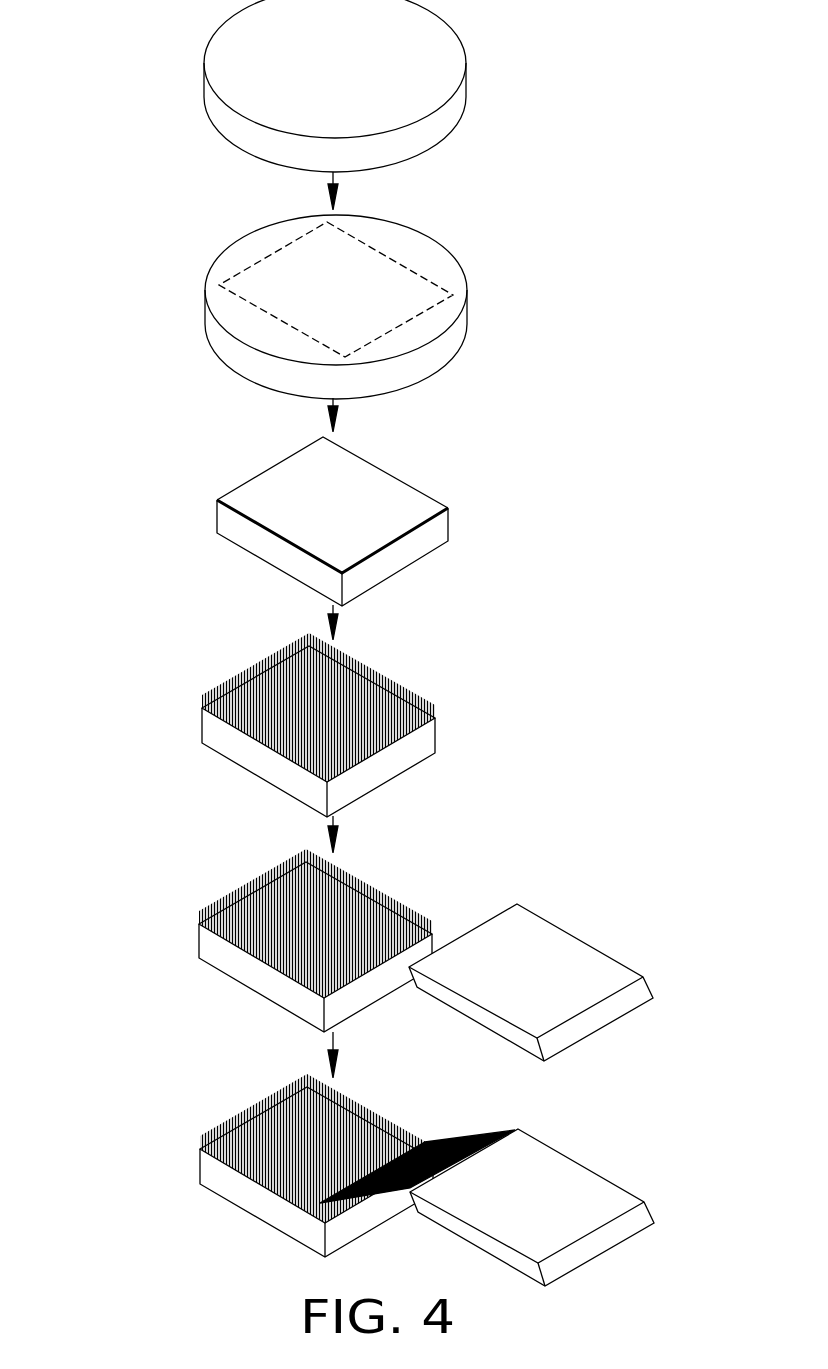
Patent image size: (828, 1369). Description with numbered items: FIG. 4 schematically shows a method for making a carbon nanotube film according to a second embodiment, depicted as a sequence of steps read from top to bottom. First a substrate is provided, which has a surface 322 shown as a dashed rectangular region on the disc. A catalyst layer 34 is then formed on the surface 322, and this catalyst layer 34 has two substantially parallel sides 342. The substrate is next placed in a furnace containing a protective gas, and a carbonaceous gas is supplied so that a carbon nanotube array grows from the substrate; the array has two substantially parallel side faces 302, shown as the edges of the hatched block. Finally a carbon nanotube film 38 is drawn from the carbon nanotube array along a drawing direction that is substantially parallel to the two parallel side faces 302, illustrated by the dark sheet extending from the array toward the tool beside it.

The side faces 302 is at (213, 706).
The surface 322 is at (385, 293).
The catalyst layer 34 is at (320, 511).
The sides 342 is at (370, 463).
The carbon nanotube film 38 is at (467, 1133).